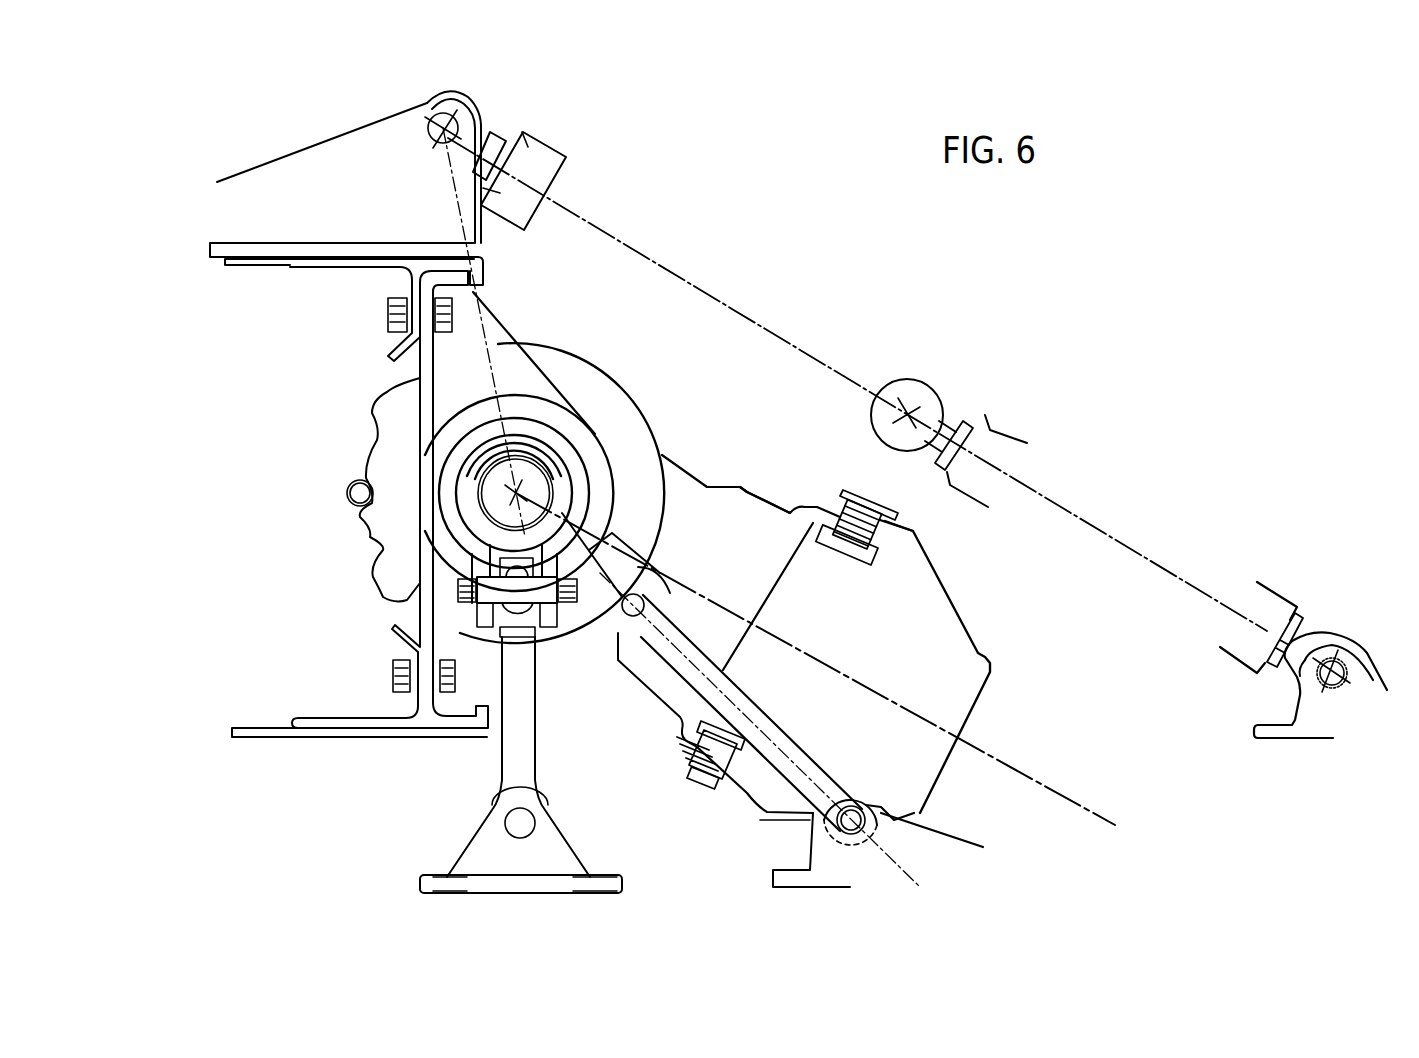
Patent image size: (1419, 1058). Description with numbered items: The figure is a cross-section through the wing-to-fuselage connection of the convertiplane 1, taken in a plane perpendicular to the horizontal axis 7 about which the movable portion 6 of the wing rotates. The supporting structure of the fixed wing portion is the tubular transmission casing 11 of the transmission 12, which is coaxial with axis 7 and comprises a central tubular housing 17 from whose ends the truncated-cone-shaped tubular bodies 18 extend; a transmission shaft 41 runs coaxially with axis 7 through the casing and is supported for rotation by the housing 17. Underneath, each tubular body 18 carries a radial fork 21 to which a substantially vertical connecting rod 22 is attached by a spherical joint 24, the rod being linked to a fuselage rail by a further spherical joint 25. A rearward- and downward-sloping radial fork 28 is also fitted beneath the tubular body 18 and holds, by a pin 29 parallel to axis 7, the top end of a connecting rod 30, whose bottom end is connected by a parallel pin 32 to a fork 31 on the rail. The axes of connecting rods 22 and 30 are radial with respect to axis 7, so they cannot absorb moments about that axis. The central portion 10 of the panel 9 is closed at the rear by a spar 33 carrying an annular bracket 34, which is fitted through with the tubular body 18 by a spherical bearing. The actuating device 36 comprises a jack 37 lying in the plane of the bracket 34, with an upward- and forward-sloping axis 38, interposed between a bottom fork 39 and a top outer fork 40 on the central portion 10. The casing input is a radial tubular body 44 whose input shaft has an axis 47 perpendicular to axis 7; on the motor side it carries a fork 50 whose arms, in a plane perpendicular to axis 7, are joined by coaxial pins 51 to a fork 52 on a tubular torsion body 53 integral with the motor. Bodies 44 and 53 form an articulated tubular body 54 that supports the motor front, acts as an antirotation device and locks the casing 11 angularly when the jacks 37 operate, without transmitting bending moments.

The convertiplane 1 is at (692, 206).
The movable portion 6 is at (240, 160).
The top outer fork 40 is at (332, 157).
The central portion 10 is at (273, 253).
The panel 9 is at (247, 266).
The spar 33 is at (410, 293).
The annular bracket 34 is at (515, 403).
The central tubular housing 17 is at (590, 370).
The tubular transmission casing 11 is at (643, 388).
The radial tubular body 44 is at (747, 500).
The tubular truncated-cone-shaped body 18 is at (553, 445).
The transmission shaft 41 is at (478, 470).
The axis 7 is at (480, 529).
The transmission 12 is at (480, 505).
The radial fork 21 is at (483, 565).
The spherical joint 24 is at (517, 593).
The connecting rod 22 is at (528, 745).
The spherical joint 25 is at (504, 822).
The radial fork 28 is at (562, 522).
The pin 29 is at (623, 647).
The connecting rod 30 is at (763, 723).
The pin 32 is at (860, 800).
The fork 31 is at (817, 858).
The tubular torsion body 53 is at (960, 807).
The fork 52 is at (955, 590).
The articulated tubular body 54 is at (915, 517).
The pin 51 is at (860, 540).
The fork 50 is at (694, 741).
The axis 47 is at (1020, 757).
The jack 37 is at (1017, 428).
The actuating device 36 is at (1095, 438).
The axis 38 is at (1103, 510).
The bottom fork 39 is at (1313, 733).